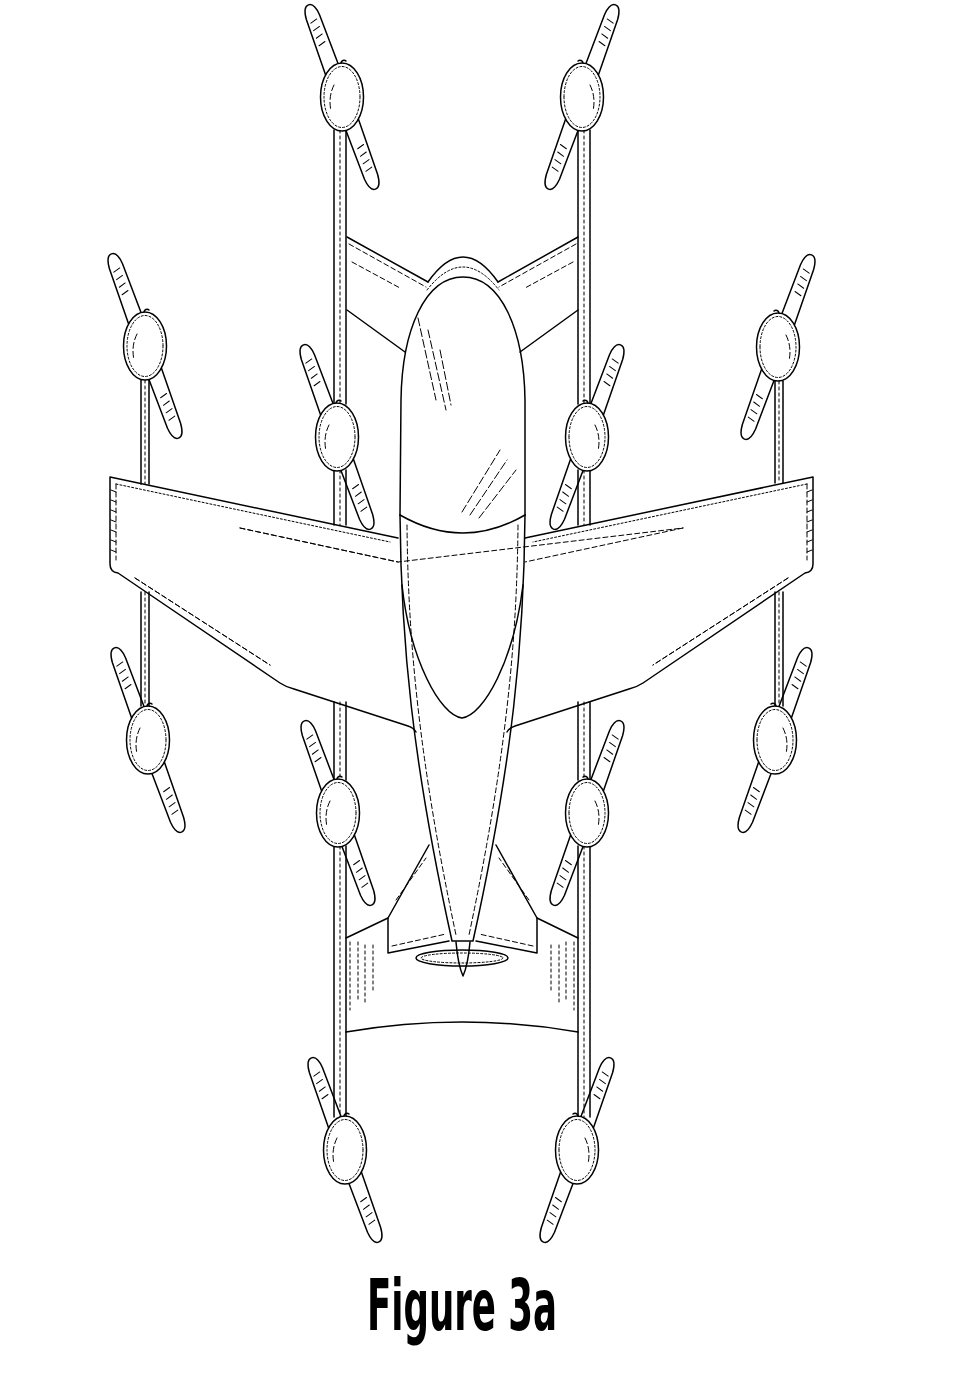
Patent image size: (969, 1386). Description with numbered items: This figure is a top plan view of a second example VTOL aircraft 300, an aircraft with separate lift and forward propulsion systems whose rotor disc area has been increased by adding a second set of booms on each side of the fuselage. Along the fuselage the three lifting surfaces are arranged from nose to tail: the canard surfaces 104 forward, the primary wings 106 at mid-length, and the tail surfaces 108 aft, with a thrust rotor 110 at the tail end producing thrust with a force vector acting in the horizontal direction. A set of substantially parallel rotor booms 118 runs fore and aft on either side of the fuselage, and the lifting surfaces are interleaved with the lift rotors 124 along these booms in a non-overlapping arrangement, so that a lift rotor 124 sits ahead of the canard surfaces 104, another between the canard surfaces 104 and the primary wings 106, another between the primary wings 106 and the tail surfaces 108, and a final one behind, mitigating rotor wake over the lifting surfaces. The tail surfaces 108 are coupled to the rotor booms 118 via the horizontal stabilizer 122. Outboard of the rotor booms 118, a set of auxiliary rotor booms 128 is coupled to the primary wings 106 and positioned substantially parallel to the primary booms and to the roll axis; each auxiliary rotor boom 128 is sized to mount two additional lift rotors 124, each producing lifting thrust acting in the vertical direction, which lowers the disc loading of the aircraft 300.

The second example VTOL aircraft 300 is at (62, 172).
The canard surfaces 104 is at (395, 263).
The primary wings 106 is at (221, 499).
The tail surfaces 108 is at (407, 882).
The thrust rotor 110 is at (511, 972).
The rotor booms 118 is at (335, 186).
The horizontal stabilizer 122 is at (510, 1025).
The lift rotors 124 is at (106, 628).
The auxiliary rotor booms 128 is at (140, 406).